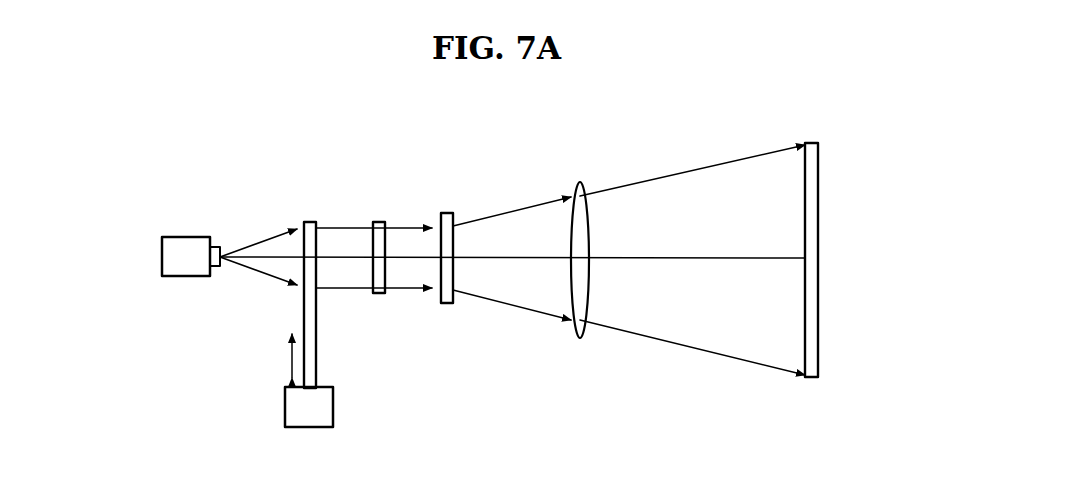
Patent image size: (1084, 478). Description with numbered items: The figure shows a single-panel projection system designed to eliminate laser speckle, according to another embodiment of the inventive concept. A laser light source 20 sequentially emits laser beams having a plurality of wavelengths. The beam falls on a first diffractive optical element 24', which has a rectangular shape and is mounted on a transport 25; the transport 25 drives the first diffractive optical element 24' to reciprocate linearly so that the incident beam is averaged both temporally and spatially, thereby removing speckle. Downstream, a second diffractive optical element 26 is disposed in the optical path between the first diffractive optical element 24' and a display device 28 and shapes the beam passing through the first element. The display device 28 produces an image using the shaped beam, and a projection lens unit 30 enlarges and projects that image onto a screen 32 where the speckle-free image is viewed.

The laser light source 20 is at (180, 277).
The first diffractive optical element 24' is at (314, 279).
The transport 25 is at (334, 408).
The second diffractive optical element 26 is at (378, 221).
The display device 28 is at (447, 212).
The projection lens unit 30 is at (580, 182).
The screen 32 is at (818, 214).